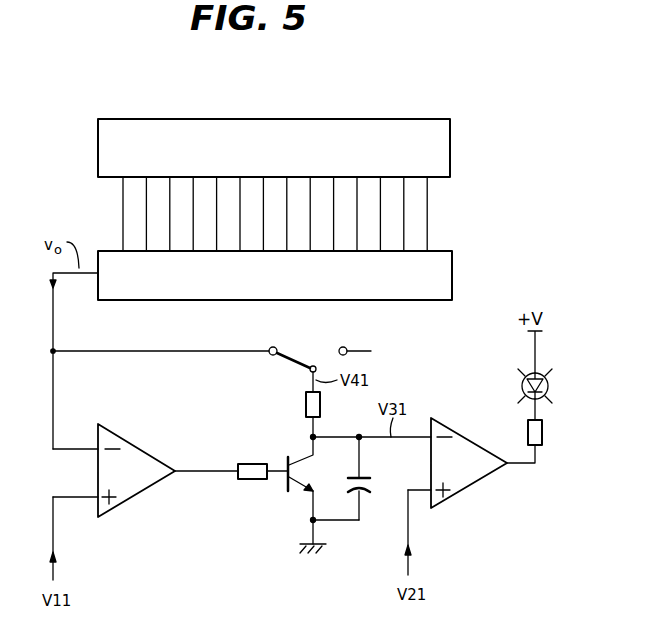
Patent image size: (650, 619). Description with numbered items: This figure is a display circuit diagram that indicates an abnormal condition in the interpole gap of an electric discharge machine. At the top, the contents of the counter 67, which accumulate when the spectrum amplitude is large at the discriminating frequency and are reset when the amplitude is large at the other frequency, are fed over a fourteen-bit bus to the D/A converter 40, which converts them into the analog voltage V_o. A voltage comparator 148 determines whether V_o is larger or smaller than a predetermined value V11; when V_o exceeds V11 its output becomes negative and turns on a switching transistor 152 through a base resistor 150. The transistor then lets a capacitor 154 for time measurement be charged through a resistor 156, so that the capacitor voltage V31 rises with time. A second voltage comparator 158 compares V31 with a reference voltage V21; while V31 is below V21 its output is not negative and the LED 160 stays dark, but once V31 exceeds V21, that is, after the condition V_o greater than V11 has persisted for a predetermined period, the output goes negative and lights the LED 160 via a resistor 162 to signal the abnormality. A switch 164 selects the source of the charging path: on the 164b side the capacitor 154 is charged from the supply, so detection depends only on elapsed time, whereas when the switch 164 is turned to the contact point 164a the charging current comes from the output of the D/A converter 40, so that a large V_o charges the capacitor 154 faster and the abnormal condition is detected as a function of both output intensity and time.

The counter 67 is at (385, 119).
The D/A converter 40 is at (453, 268).
The contact point 164a is at (270, 346).
The switch 164 is at (302, 357).
The contact point 164b is at (345, 346).
The resistor 156 is at (306, 404).
The base resistor 150 is at (248, 464).
The voltage comparator 148 is at (152, 485).
The switching transistor 152 is at (296, 490).
The capacitor 154 is at (372, 483).
The voltage comparator 158 is at (470, 440).
The LED 160 is at (518, 379).
The resistor 162 is at (543, 433).